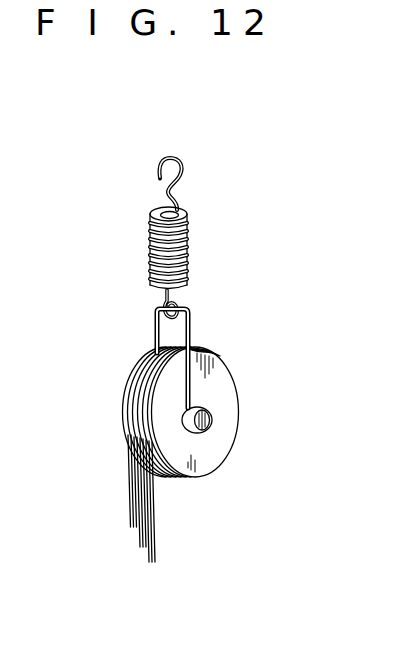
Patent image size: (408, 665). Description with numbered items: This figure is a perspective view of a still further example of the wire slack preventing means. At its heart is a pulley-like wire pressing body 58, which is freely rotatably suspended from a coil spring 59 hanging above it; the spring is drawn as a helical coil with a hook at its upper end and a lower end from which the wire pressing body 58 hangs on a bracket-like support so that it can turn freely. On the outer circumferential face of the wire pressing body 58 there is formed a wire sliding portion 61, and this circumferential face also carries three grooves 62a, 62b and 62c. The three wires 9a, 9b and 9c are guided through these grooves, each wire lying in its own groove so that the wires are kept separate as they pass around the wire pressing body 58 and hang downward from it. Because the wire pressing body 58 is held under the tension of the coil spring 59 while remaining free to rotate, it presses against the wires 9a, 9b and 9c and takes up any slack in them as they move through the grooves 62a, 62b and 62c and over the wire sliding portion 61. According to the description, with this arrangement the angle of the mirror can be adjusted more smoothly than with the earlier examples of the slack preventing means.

The wire pressing body 58 is at (225, 377).
The coil spring 59 is at (148, 248).
The wire sliding portion 61 is at (152, 369).
The groove 62a is at (131, 388).
The groove 62b is at (145, 373).
The groove 62c is at (143, 406).
The wire 9a is at (130, 484).
The wire 9b is at (131, 508).
The wire 9c is at (148, 541).